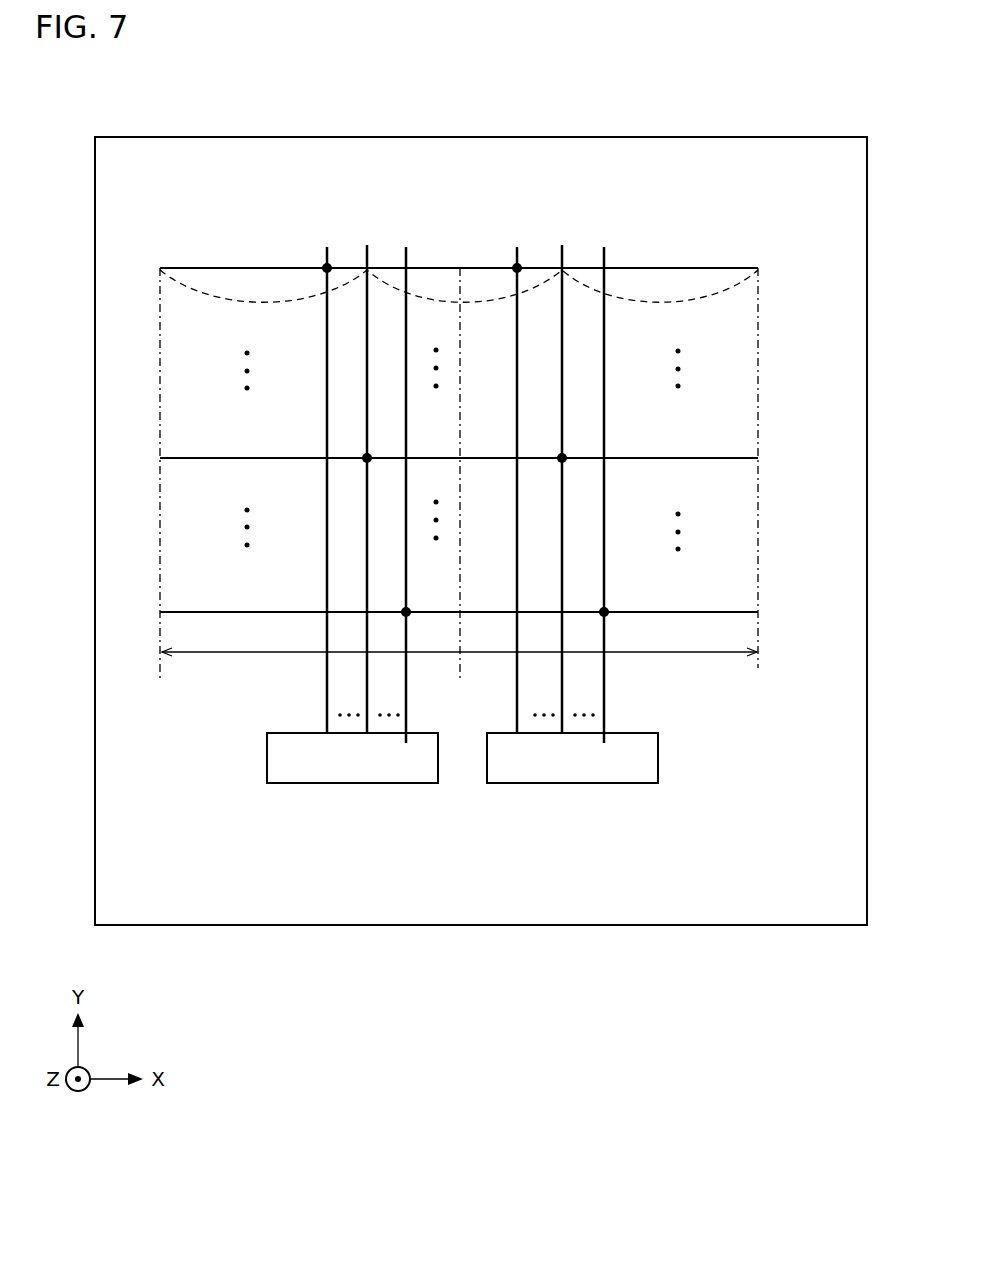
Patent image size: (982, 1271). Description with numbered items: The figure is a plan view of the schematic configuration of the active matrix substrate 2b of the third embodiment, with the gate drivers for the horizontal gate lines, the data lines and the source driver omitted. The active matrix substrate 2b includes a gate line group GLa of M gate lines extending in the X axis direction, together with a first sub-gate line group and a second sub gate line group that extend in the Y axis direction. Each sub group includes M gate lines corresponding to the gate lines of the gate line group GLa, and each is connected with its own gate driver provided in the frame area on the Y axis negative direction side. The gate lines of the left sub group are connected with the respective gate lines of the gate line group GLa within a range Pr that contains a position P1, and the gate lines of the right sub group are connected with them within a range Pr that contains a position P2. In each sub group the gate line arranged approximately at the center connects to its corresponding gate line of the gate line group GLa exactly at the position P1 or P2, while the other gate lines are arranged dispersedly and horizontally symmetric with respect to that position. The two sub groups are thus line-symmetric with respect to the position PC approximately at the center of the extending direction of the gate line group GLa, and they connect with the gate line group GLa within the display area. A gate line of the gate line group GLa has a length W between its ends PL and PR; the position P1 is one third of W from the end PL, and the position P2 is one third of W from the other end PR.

The active matrix substrate 2b is at (478, 116).
The one end of gate line PL is at (157, 483).
The center position PC is at (463, 483).
The other end of gate line PR is at (768, 483).
The gate line group GLa is at (533, 423).
The range Pr is at (412, 202).
The position P1 is at (367, 232).
The position P2 is at (562, 232).
The gate line length W is at (459, 641).